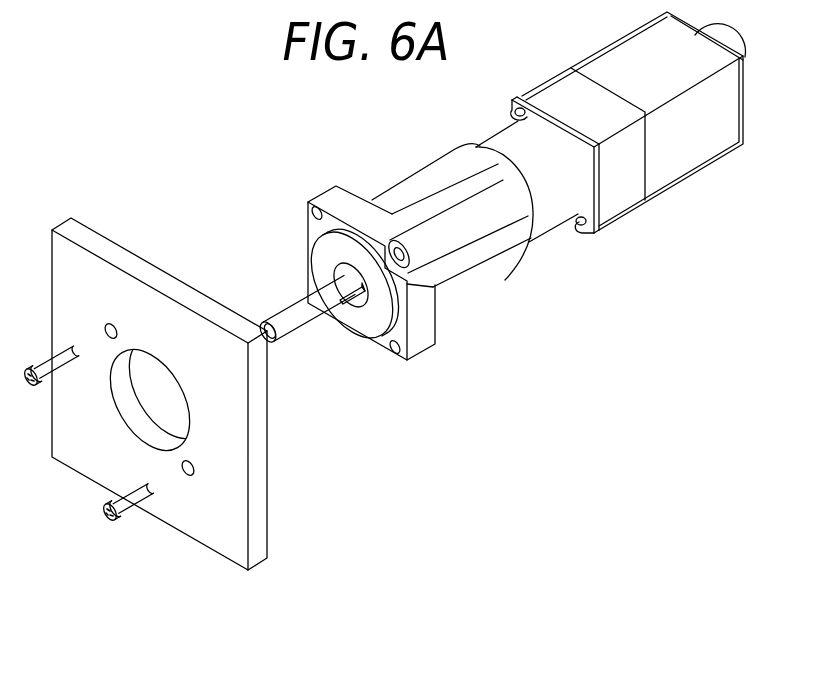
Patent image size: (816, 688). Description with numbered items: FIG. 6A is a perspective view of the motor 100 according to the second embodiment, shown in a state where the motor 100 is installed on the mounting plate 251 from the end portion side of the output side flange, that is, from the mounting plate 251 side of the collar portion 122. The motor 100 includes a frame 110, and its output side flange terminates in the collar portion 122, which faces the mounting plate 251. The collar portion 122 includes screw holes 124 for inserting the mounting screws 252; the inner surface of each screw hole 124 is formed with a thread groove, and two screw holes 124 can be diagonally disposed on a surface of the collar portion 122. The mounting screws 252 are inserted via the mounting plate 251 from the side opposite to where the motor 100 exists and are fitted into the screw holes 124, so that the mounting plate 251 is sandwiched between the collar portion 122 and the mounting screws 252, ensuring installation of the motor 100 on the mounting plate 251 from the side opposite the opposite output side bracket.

The motor 100 is at (558, 384).
The frame 110 is at (550, 213).
The collar portion 122 is at (340, 200).
The screw hole 124 is at (395, 355).
The mounting plate 251 is at (260, 553).
The mounting screw 252 is at (133, 500).